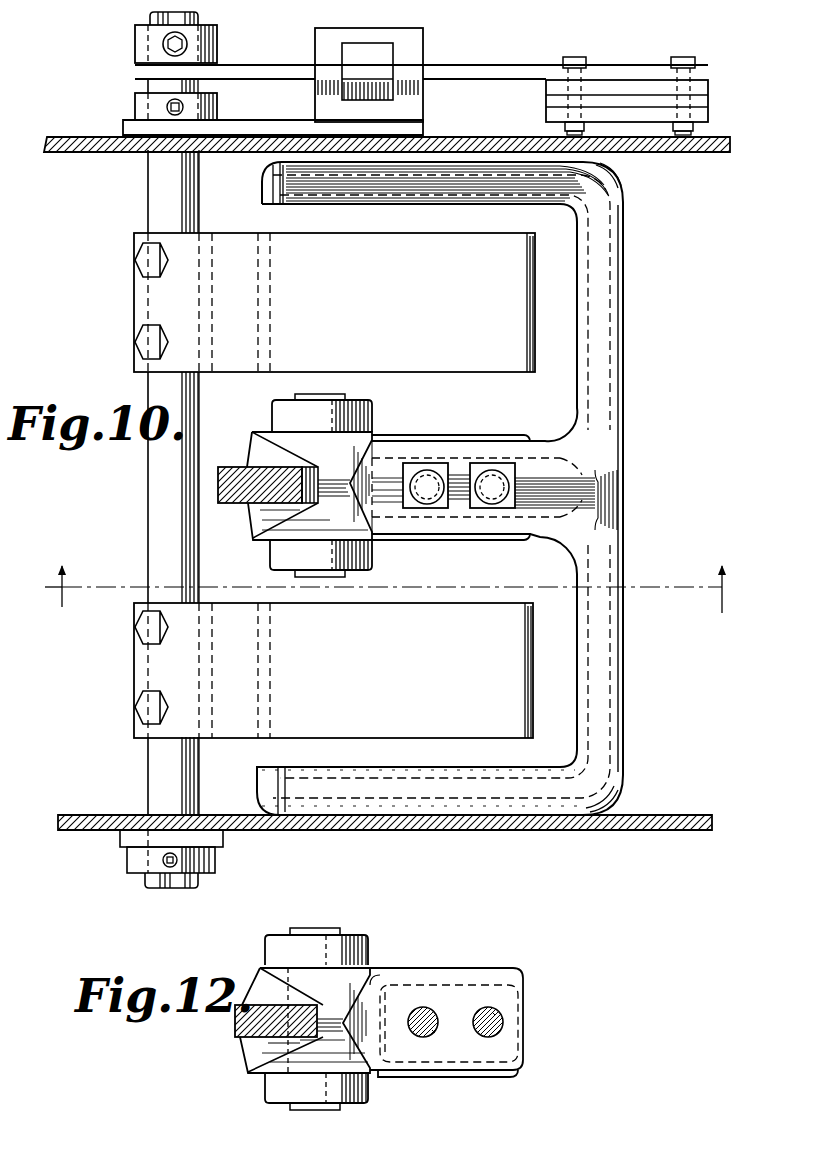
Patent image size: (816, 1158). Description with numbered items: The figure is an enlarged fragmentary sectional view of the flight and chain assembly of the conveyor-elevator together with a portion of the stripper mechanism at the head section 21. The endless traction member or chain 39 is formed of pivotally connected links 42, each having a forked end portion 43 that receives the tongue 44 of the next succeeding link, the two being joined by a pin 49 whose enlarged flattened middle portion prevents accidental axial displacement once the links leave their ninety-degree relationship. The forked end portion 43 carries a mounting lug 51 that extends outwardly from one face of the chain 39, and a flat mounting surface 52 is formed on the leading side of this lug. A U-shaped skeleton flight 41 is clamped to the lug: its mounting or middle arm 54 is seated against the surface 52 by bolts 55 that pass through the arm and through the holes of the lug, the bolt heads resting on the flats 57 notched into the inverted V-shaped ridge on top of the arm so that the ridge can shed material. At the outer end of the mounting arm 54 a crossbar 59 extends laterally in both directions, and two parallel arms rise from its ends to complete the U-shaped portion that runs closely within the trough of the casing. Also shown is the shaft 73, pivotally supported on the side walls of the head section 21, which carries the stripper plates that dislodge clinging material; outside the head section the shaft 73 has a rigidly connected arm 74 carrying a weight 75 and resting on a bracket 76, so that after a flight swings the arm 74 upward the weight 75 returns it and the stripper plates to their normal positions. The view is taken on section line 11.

In FIG. 10, the section line 11- 11 is at (386, 589).
In FIG. 10, the head section 21 is at (605, 838).
In FIG. 10, the chain 39 is at (376, 413).
In FIG. 12, the chain 39 is at (374, 945).
In FIG. 10, the flights 41 is at (604, 331).
In FIG. 10, the links 42 is at (226, 505).
In FIG. 12, the links 42 is at (245, 1020).
In FIG. 10, the forked end portion 43 is at (277, 412).
In FIG. 12, the forked end portion 43 is at (273, 1087).
In FIG. 12, the tongue 44 is at (267, 1043).
In FIG. 10, the pin 49 is at (325, 573).
In FIG. 12, the pin 49 is at (330, 928).
In FIG. 10, the mounting lug 51 is at (490, 434).
In FIG. 12, the mounting lug 51 is at (445, 968).
In FIG. 10, the mounting surface 52 is at (462, 541).
In FIG. 12, the mounting surface 52 is at (498, 975).
In FIG. 10, the mounting arm 54 is at (405, 524).
In FIG. 12, the bolts 55 is at (493, 1015).
In FIG. 10, the flats 57 is at (462, 470).
In FIG. 10, the crossbar 59 is at (624, 675).
In FIG. 10, the shaft 73 is at (158, 509).
In FIG. 10, the arm 74 is at (485, 66).
In FIG. 10, the weight 75 is at (709, 100).
In FIG. 10, the bracket 76 is at (424, 100).